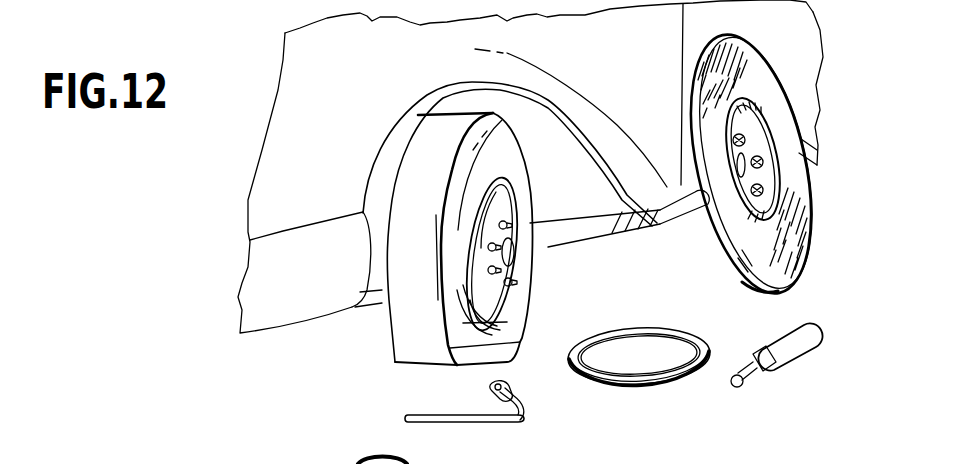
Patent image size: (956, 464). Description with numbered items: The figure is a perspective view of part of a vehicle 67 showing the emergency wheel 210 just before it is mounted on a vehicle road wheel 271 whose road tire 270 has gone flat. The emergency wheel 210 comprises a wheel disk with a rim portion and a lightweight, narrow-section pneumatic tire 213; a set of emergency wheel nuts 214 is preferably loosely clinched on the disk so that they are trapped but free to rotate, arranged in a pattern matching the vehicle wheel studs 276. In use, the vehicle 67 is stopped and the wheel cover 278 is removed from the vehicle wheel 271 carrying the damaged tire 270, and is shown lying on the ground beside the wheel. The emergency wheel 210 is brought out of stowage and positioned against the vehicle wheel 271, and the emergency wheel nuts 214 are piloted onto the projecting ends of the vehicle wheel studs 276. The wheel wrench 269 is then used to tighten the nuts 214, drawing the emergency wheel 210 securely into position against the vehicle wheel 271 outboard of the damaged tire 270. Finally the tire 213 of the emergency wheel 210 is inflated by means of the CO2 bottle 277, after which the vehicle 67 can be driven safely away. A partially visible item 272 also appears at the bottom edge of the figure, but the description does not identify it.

The vehicle 67 is at (305, 320).
The emergency wheel 210 is at (767, 169).
The pneumatic tire 213 is at (763, 63).
The emergency wheel nuts 214 is at (763, 163).
The wheel wrench 269 is at (481, 427).
The road tire 270 is at (530, 174).
The vehicle road wheel 271 is at (528, 227).
The jack 272 is at (273, 459).
The vehicle wheel studs 276 is at (513, 283).
The CO2 bottle 277 is at (785, 363).
The wheel cover 278 is at (647, 390).